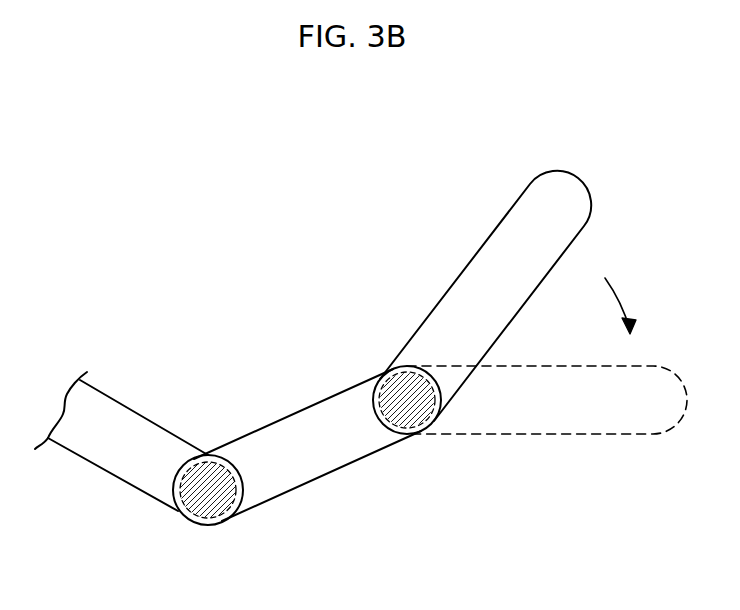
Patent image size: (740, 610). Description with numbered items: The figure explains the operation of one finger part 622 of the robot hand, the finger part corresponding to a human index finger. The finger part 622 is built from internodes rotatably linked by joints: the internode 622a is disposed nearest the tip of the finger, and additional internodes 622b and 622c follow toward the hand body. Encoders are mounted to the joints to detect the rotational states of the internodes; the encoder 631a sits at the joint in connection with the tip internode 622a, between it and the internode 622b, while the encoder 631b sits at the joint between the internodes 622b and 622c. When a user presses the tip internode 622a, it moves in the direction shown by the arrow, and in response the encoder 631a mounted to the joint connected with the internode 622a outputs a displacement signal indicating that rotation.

The finger part 622 is at (361, 318).
The internode 622a is at (562, 183).
The internode 622b is at (298, 427).
The internode 622c is at (117, 413).
The encoder 631a is at (410, 413).
The encoder 631b is at (215, 495).